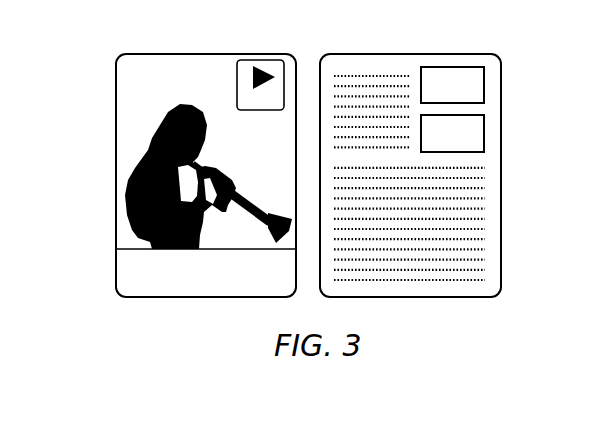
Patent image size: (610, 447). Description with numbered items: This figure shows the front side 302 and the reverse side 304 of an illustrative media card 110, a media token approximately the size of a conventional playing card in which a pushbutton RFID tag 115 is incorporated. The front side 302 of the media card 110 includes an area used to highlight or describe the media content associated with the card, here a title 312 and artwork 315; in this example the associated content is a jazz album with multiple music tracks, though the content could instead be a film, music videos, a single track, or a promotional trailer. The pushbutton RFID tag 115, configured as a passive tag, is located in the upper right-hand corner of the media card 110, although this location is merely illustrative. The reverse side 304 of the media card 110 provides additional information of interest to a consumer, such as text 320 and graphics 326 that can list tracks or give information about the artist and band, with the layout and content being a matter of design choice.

The media card 110 is at (116, 82).
The front side 302 is at (173, 128).
The reverse side 304 is at (449, 144).
The title 312 is at (134, 95).
The artwork 315 is at (124, 220).
The pushbutton RFID tag 115 is at (272, 67).
The text 320 is at (410, 150).
The graphics 326 is at (453, 85).